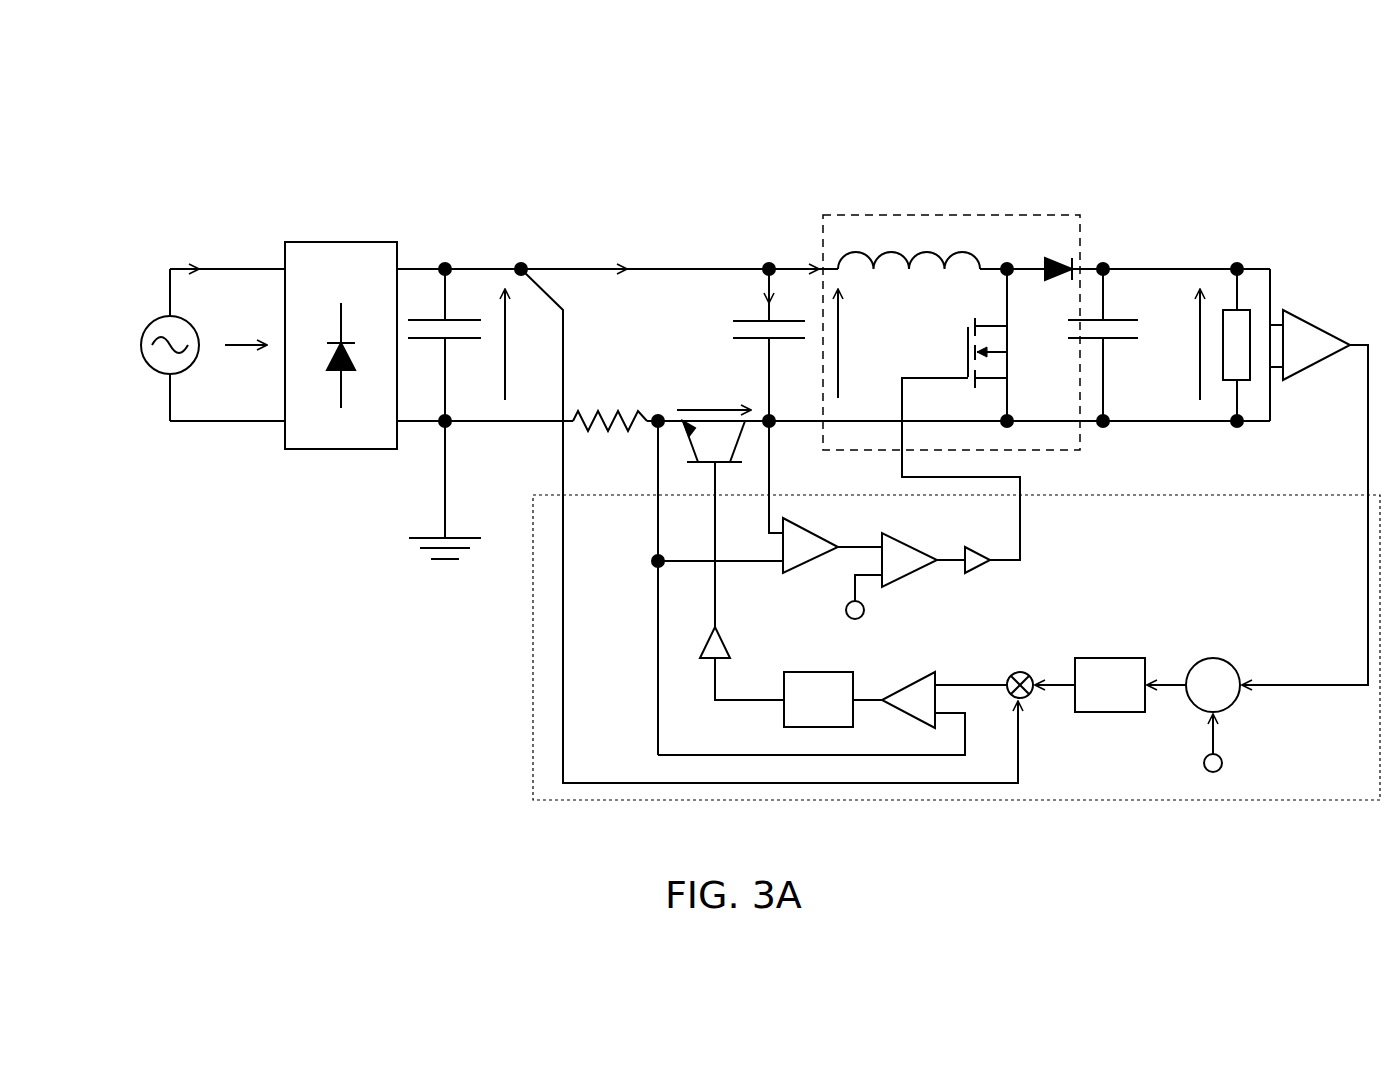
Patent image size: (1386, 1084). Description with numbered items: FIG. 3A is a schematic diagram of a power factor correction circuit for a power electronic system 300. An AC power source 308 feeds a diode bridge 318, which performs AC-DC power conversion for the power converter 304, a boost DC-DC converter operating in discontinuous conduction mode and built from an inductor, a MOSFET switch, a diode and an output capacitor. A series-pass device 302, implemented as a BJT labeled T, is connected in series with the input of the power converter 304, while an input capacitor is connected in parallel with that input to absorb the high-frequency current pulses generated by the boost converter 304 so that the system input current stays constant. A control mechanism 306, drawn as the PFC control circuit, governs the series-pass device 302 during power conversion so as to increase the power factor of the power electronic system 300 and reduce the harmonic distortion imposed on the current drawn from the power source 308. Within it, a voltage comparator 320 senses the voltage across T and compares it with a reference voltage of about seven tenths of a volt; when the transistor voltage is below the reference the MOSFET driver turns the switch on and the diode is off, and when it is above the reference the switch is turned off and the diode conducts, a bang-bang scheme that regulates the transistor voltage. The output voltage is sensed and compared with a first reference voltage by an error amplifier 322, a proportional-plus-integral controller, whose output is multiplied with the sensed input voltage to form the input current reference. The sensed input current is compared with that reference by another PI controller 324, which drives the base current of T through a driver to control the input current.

The power electronic system 300 is at (1222, 186).
The series-pass device 302 is at (707, 437).
The power converter 304 is at (945, 215).
The control mechanism 306 is at (1125, 800).
The power source 308 is at (153, 380).
The diode bridge 318 is at (337, 241).
The voltage comparator 320 is at (870, 567).
The error amplifier 322 is at (1102, 720).
The PI controller 324 is at (822, 735).